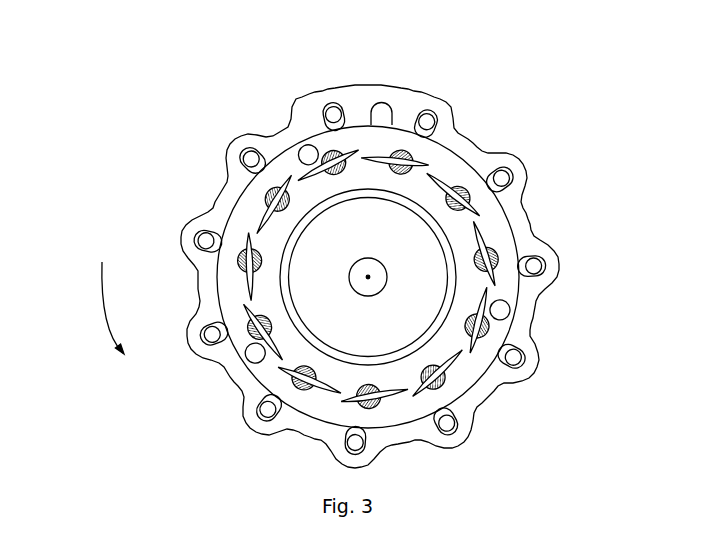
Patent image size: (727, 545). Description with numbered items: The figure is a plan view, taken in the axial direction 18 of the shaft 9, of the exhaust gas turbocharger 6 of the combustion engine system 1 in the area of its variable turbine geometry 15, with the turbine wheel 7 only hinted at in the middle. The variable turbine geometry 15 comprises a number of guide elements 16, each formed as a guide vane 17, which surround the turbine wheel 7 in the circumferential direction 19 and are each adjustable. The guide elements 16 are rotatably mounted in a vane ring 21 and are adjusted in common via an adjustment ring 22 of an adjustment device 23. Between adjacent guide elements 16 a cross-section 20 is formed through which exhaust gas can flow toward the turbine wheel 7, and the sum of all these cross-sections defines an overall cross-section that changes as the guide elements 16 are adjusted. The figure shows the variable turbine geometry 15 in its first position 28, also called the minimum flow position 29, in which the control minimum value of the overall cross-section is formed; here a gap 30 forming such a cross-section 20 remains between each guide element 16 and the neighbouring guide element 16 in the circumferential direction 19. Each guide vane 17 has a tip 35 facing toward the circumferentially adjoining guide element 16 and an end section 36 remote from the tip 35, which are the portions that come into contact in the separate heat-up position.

The combustion engine system 1 is at (139, 97).
The exhaust gas turbocharger 6 is at (584, 102).
The turbine wheel 7 is at (427, 330).
The shaft 9 is at (374, 289).
The variable turbine geometry 15 is at (132, 147).
The guide element 16 is at (501, 288).
The guide vane 17 is at (385, 272).
The axial direction 18 is at (369, 272).
The circumferential direction 19 is at (102, 303).
The cross-section 20 is at (366, 157).
The vane ring 21 is at (480, 168).
The adjustment ring 22 is at (542, 312).
The adjustment device 23 is at (549, 369).
The first position 28 is at (241, 96).
The minimum flow position 29 is at (401, 276).
The gap 30 is at (290, 358).
The tip 35 is at (252, 302).
The end section 36 is at (245, 238).